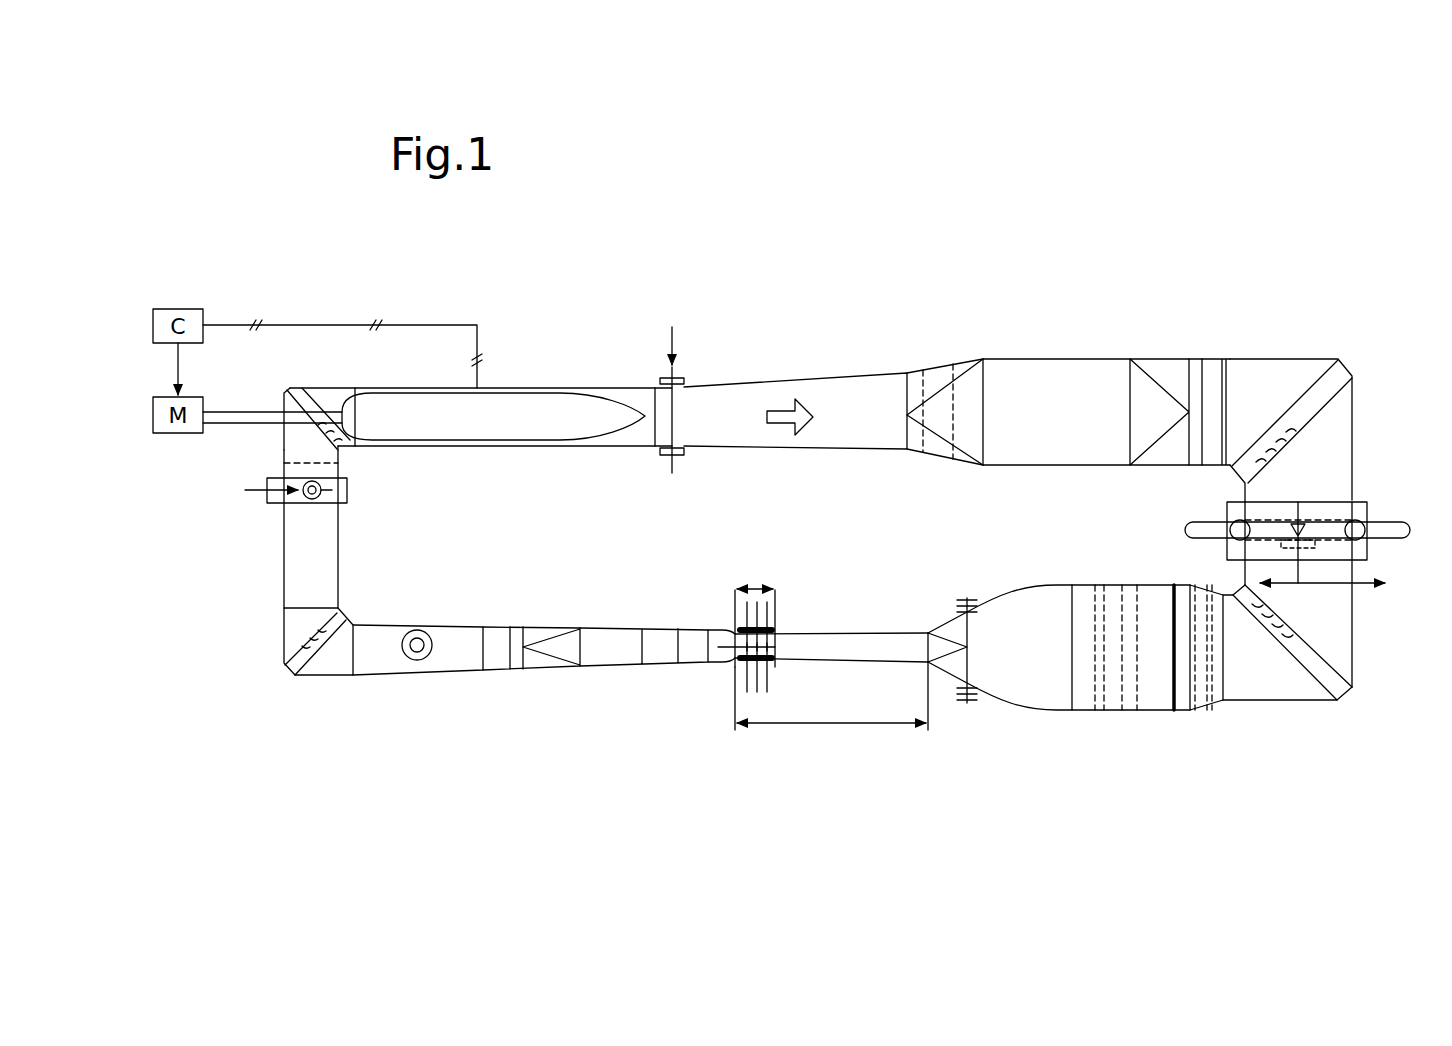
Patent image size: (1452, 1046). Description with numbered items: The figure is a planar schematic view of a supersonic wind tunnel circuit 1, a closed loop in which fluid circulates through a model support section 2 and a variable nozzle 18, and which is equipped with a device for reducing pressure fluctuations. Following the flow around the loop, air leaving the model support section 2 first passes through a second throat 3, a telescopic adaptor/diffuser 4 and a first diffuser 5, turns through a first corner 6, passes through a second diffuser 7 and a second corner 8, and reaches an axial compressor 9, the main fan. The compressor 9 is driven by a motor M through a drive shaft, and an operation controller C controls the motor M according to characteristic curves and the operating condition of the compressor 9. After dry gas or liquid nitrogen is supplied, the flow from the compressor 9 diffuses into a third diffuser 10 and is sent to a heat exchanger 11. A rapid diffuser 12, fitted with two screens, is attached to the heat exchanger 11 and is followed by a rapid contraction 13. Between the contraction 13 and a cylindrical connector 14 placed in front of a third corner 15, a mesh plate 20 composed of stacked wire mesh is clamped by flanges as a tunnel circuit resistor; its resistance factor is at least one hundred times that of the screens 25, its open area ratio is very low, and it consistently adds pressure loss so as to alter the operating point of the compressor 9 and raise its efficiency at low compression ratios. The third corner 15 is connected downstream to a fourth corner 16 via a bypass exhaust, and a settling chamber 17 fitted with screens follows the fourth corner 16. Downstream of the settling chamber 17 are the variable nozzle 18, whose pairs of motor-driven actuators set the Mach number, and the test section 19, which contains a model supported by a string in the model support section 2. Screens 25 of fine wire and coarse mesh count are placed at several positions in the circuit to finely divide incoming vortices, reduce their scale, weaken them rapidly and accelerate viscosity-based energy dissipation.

The supersonic wind tunnel circuit 1 is at (729, 286).
The model support section 2 is at (713, 668).
The second throat 3 is at (608, 667).
The telescopic adaptor/diffuser 4 is at (545, 668).
The first diffuser 5 is at (394, 678).
The first corner 6 is at (311, 678).
The second diffuser 7 is at (340, 561).
The second corner 8 is at (311, 386).
The axial compressor 9 is at (500, 384).
The third diffuser 10 is at (850, 372).
The heat exchanger 11 is at (1037, 357).
The rapid diffuser 12 is at (940, 455).
The rapid contraction 13 is at (1150, 357).
The cylindrical connector 14 is at (1220, 357).
The third corner 15 is at (1318, 357).
The fourth corner 16 is at (1322, 703).
The settling chamber 17 is at (1080, 712).
The variable nozzle 18 is at (770, 724).
The test section 19 is at (758, 586).
The mesh plate 20 is at (1200, 357).
The screens 25 is at (953, 362).